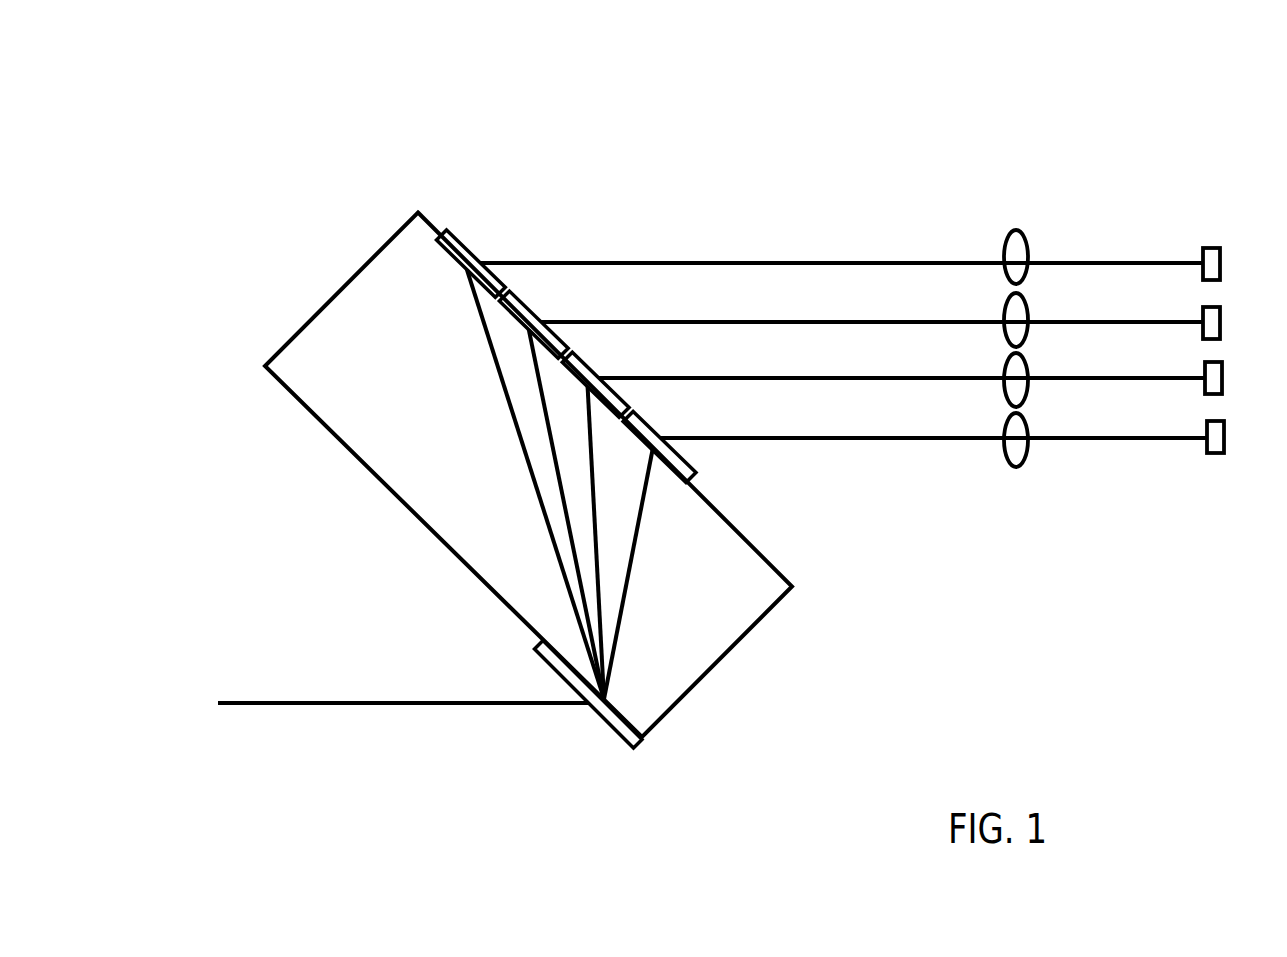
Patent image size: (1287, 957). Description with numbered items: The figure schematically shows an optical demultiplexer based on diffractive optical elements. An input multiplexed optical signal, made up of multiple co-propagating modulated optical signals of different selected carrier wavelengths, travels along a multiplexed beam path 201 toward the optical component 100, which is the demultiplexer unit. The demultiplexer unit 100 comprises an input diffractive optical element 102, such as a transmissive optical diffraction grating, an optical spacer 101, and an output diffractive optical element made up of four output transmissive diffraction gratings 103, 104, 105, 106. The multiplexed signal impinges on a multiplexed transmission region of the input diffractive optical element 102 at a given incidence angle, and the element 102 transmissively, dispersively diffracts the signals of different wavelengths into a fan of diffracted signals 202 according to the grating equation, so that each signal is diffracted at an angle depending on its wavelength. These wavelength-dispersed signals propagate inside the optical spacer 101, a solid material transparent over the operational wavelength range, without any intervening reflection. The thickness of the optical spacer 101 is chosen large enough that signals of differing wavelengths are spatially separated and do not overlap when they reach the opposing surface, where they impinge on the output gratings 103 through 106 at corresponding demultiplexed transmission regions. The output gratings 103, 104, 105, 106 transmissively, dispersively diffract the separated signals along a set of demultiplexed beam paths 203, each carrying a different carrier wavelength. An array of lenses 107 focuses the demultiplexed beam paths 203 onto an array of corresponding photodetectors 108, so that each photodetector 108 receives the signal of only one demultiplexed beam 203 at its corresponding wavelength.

The optical component 100 is at (287, 523).
The optical spacer 101 is at (737, 595).
The input diffractive optical element 102 is at (627, 745).
The output transmissive diffraction grating 103 is at (461, 244).
The output transmissive diffraction grating 104 is at (525, 306).
The output transmissive diffraction grating 105 is at (591, 364).
The output transmissive diffraction grating 106 is at (645, 422).
The array of lenses 107 is at (1026, 506).
The photodetectors 108 is at (1221, 492).
The multiplexed beam path 201 is at (398, 705).
The fan of diffracted signals 202 is at (447, 402).
The demultiplexed beam paths 203 is at (883, 222).